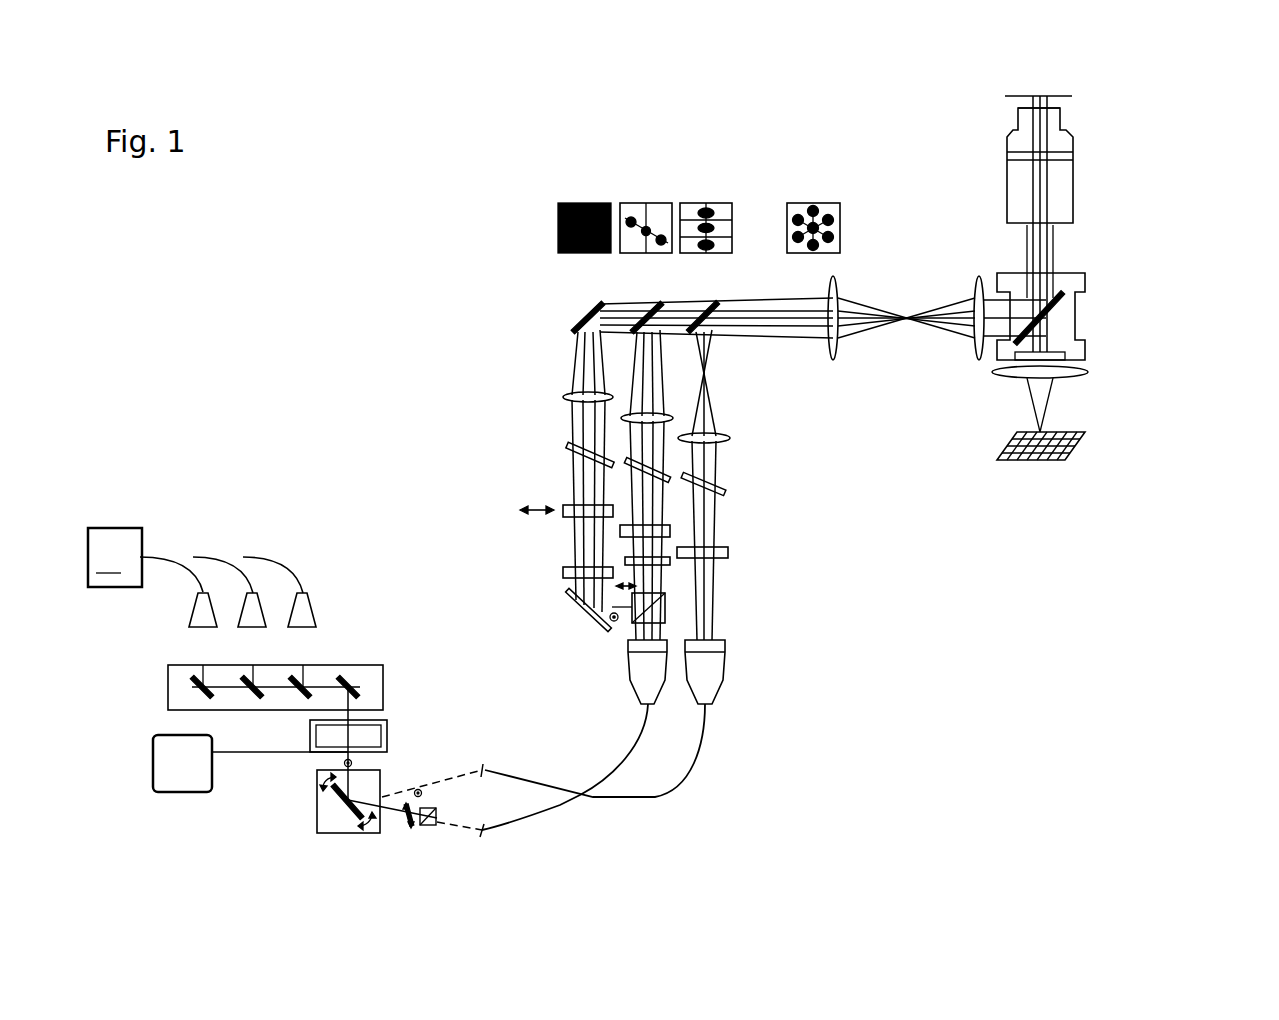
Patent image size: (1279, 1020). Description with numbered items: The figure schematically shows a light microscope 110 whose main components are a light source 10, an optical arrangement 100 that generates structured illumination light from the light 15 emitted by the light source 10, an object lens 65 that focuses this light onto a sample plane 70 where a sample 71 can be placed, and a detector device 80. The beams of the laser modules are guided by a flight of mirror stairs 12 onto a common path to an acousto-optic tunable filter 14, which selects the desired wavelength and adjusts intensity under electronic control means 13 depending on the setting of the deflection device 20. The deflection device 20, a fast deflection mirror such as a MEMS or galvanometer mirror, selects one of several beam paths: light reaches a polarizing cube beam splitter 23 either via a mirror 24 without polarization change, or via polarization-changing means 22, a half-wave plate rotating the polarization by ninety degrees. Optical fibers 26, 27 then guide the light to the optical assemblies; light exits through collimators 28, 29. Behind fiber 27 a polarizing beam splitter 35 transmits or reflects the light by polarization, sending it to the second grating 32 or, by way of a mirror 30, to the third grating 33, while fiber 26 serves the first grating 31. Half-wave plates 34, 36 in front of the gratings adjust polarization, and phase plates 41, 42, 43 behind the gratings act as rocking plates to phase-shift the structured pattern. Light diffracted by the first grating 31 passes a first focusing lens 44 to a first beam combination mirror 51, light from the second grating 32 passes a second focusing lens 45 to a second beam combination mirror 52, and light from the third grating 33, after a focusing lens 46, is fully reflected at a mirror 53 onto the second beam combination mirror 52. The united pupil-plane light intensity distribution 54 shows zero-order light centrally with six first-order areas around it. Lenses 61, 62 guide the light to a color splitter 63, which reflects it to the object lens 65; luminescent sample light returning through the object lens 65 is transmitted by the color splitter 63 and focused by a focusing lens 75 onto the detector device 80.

The light source 10 is at (115, 557).
The flight of mirror stairs 12 is at (160, 687).
The electronic control means 13 is at (222, 763).
The acousto-optic tunable filter 14 is at (310, 740).
The light 15 is at (853, 298).
The deflection device 20 is at (306, 798).
The polarization-changing means 22 is at (418, 789).
The polarizing cube beam splitter 23 is at (437, 816).
The mirror 24 is at (432, 802).
The optical fiber 26 is at (702, 768).
The optical fiber 27 is at (625, 765).
The collimator 28 is at (720, 690).
The collimator 29 is at (630, 690).
The mirror 30 is at (578, 605).
The first grating 31 is at (730, 553).
The second grating 32 is at (672, 532).
The third grating 33 is at (563, 508).
The λ/2 plate 34 is at (670, 560).
The polarizing beam splitter 35 is at (632, 625).
The λ/2 plate 36 is at (563, 572).
The phase plate 41 is at (727, 490).
The phase plate 42 is at (672, 470).
The phase plate 43 is at (570, 448).
The first focusing lens 44 is at (732, 437).
The second focusing lens 45 is at (673, 418).
The focusing lens 46 is at (568, 395).
The first beam combination mirror 51 is at (708, 203).
The second beam combination mirror 52 is at (650, 203).
The mirror 53 is at (590, 203).
The light intensity distribution 54 is at (818, 203).
The lens 61 is at (840, 352).
The lens 62 is at (977, 355).
The color splitter 63 is at (1068, 290).
The object lens 65 is at (1080, 186).
The sample plane 70 is at (1062, 98).
The sample 71 is at (1045, 96).
The focusing lens 75 is at (1092, 372).
The detector device 80 is at (1088, 446).
The optical arrangement 100 is at (781, 757).
The light microscope 110 is at (1193, 132).